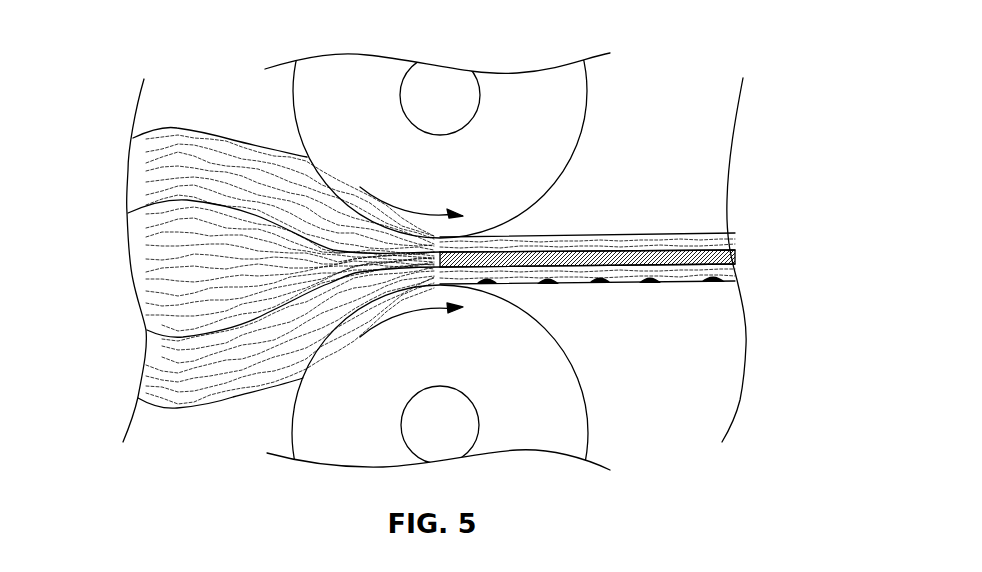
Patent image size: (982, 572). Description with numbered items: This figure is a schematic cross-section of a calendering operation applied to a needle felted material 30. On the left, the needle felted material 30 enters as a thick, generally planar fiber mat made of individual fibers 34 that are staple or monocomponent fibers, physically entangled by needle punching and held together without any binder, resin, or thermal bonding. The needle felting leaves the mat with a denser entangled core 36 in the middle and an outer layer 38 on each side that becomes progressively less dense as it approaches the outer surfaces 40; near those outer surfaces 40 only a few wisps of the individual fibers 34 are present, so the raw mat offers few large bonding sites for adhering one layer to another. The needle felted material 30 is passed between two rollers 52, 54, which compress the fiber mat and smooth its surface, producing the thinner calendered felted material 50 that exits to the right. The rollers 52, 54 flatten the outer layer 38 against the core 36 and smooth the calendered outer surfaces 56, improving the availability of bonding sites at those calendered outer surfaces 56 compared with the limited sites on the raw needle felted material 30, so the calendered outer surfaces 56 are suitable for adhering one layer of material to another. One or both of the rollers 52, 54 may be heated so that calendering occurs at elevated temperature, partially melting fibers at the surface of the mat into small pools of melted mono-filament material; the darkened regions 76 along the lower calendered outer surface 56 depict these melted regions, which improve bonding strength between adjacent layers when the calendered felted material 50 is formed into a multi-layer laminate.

The needle felted material 30 is at (116, 115).
The individual fibers 34 is at (192, 147).
The core 36 is at (147, 260).
The outer layer 38 is at (135, 170).
The outer surfaces 40 is at (228, 135).
The calendered felted material 50 is at (615, 205).
The roller 52 is at (508, 150).
The roller 54 is at (508, 405).
The calendered outer surfaces 56 is at (685, 233).
The adhesive bonding regions 76 is at (598, 282).